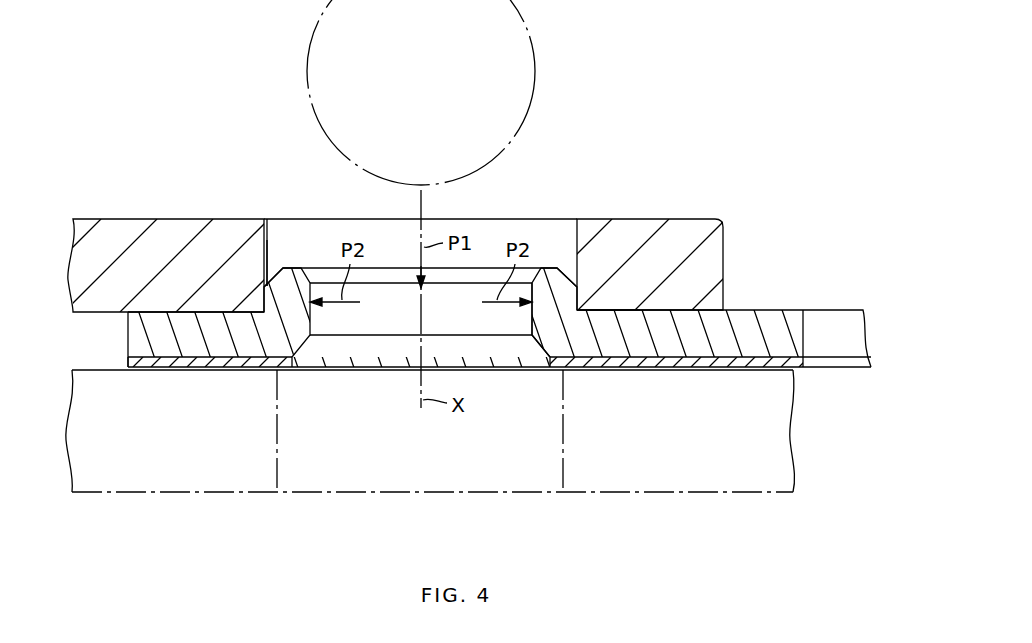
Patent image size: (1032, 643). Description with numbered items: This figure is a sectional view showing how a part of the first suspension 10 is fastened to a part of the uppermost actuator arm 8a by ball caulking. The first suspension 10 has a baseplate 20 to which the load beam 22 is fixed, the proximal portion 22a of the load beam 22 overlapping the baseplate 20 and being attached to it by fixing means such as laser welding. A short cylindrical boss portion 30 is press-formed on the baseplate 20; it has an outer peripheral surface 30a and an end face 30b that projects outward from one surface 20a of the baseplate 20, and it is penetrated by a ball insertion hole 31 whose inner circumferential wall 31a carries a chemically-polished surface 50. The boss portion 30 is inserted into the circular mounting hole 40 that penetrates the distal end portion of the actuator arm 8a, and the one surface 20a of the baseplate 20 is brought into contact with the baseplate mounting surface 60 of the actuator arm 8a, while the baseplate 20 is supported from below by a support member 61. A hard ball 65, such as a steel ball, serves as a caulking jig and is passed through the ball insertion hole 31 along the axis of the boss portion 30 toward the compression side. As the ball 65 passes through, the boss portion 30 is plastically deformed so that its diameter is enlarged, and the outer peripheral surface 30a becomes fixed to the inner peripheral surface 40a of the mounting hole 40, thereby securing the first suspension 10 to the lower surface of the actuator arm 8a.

The actuator arm 8a is at (125, 242).
The first suspension 10 is at (834, 276).
The baseplate 20 is at (758, 318).
The one surface of the baseplate 20a is at (638, 300).
The load beam 22 is at (733, 360).
The proximal portion 22a is at (208, 363).
The boss portion 30 is at (293, 277).
The outer peripheral surface 30a is at (263, 298).
The end face 30b is at (548, 267).
The ball insertion hole 31 is at (375, 323).
The inner circumferential wall 31a is at (544, 332).
The mounting hole 40 is at (490, 233).
The inner peripheral surface 40a is at (267, 243).
The chemically-polished surface 50 is at (530, 310).
The baseplate mounting surface 60 is at (608, 313).
The support member 61 is at (585, 492).
The ball 65 is at (530, 33).